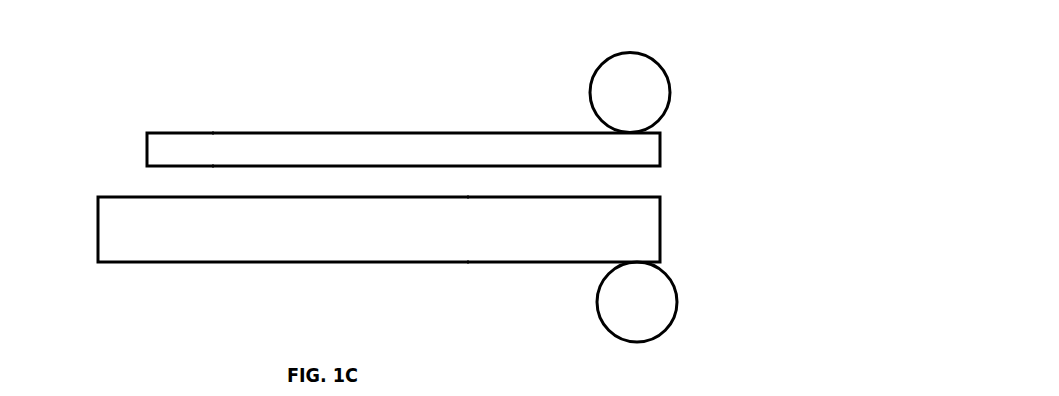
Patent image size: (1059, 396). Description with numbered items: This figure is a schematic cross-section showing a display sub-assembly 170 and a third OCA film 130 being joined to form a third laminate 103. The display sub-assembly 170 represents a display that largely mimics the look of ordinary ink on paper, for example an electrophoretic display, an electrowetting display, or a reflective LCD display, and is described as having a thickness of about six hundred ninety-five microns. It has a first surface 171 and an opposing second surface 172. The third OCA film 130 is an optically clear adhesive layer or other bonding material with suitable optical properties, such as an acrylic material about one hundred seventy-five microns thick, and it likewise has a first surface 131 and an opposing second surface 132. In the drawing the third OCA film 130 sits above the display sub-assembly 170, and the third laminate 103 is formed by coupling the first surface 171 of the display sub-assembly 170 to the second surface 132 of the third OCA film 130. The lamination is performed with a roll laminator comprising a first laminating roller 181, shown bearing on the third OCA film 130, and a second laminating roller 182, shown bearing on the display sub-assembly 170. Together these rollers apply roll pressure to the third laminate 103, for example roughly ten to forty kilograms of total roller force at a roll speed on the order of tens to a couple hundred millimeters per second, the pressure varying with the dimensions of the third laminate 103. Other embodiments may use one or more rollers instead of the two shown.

The third laminate 103 is at (64, 132).
The third OCA film 130 is at (660, 148).
The first surface 131 is at (213, 133).
The second surface 132 is at (213, 166).
The display sub-assembly 170 is at (660, 230).
The first surface 171 is at (468, 197).
The second surface 172 is at (467, 262).
The first laminating roller 181 is at (670, 96).
The second laminating roller 182 is at (677, 303).